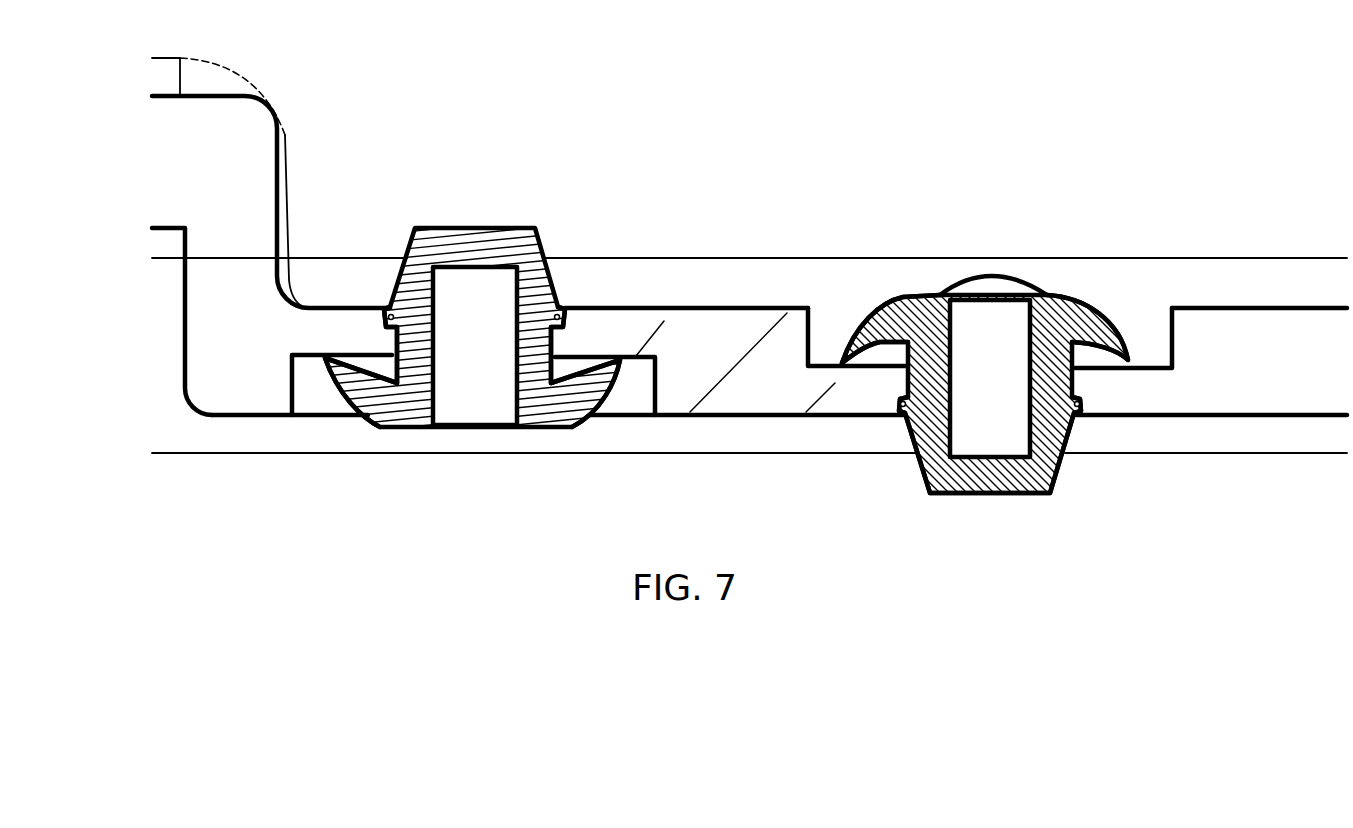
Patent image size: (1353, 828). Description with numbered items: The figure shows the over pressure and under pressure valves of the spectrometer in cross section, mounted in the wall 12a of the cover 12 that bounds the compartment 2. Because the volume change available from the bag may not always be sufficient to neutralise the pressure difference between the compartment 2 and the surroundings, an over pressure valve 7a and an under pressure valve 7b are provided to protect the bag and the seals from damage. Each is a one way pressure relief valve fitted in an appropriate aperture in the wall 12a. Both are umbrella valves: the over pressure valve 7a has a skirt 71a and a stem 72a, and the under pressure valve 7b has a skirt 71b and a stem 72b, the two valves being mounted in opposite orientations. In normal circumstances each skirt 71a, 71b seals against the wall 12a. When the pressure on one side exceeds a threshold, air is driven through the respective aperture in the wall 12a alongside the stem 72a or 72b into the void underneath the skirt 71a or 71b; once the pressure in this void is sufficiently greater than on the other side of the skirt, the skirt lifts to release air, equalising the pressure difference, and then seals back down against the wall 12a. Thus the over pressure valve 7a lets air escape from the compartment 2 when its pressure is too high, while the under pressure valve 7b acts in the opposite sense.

The compartment 2 is at (762, 140).
The cover 12 is at (236, 392).
The wall 12a is at (747, 392).
The over pressure valve 7a is at (493, 240).
The skirt 71a is at (627, 358).
The stem 72a is at (530, 320).
The under pressure valve 7b is at (1043, 475).
The skirt 71b is at (1133, 365).
The stem 72b is at (932, 393).